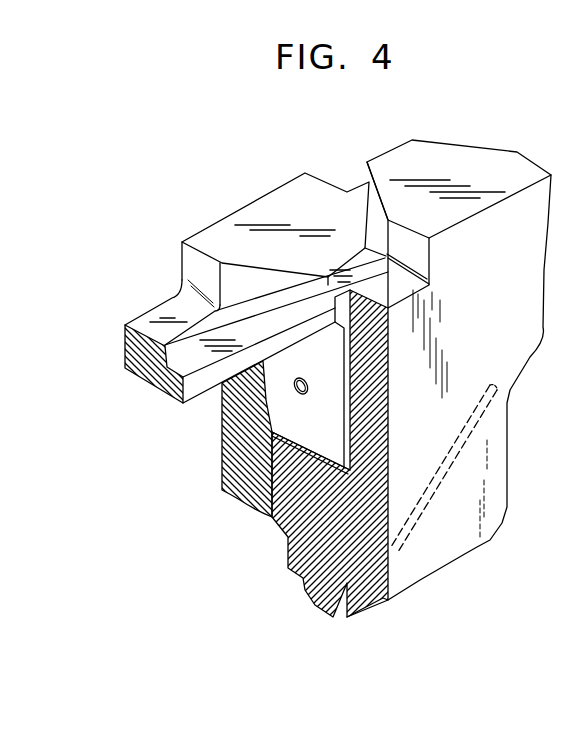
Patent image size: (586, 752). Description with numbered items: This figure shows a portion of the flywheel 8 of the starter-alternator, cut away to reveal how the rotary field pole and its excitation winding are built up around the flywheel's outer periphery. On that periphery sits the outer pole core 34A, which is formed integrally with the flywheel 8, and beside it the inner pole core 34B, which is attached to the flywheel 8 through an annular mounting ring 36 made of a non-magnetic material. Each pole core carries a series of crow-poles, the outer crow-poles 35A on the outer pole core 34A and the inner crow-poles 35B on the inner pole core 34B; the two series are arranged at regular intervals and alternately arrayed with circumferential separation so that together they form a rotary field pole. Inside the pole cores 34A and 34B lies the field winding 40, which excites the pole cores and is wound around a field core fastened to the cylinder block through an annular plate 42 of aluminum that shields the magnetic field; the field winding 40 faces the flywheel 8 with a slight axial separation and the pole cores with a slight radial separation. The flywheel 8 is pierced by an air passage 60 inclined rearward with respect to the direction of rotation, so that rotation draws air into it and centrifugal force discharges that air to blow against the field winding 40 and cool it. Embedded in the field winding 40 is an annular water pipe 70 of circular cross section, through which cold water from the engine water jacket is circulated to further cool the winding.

The flywheel 8 is at (410, 565).
The outer pole core 34A is at (130, 372).
The inner pole core 34B is at (412, 263).
The outer crow-poles 35A is at (330, 207).
The inner crow-poles 35B is at (445, 158).
The annular mounting ring 36 is at (178, 402).
The field winding 40 is at (280, 395).
The annular plate 42 is at (230, 455).
The air passage 60 is at (472, 442).
The annular water pipe 70 is at (306, 395).